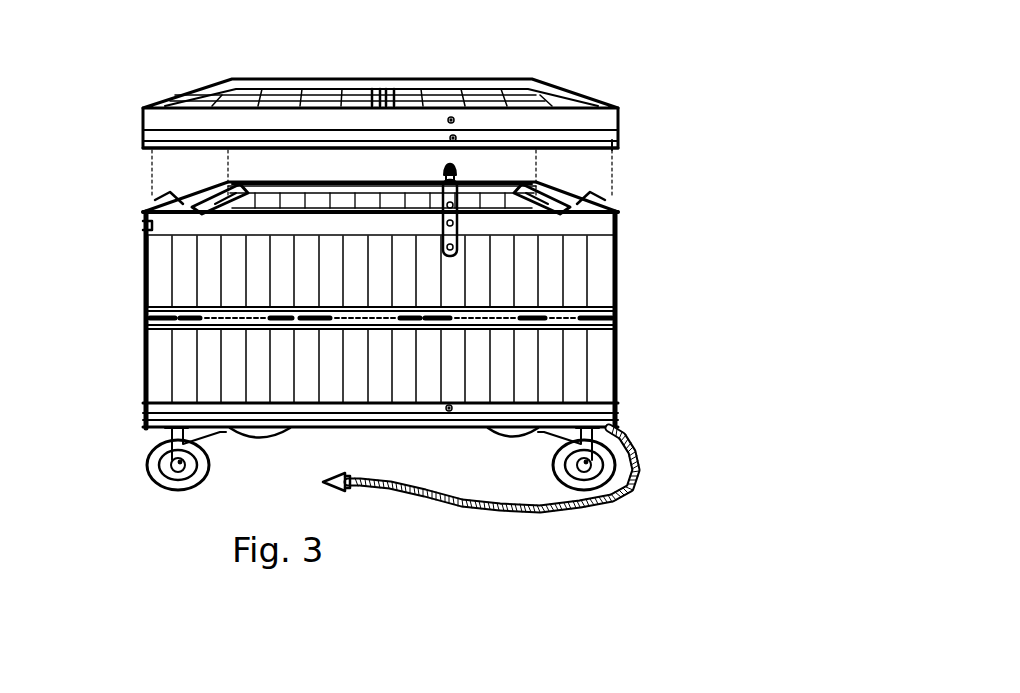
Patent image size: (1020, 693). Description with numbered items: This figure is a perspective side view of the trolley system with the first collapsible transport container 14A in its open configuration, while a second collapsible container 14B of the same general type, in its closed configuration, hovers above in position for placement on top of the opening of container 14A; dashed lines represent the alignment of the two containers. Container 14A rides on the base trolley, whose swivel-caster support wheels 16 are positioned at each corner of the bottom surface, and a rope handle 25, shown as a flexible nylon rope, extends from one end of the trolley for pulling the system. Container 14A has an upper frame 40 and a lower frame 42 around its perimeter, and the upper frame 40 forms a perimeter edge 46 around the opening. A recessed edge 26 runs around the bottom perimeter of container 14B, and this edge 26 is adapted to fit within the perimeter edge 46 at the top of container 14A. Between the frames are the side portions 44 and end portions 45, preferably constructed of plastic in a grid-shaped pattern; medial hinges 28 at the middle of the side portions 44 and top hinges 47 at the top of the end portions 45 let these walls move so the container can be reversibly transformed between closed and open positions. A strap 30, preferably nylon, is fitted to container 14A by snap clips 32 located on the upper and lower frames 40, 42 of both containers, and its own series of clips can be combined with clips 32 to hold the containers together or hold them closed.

The first collapsible transport container 14A is at (622, 271).
The second collapsible container 14B is at (150, 119).
The swivel-caster support wheels 16 is at (178, 490).
The rope handle 25 is at (630, 492).
The recessed edge 26 is at (620, 147).
The medial hinges 28 is at (620, 319).
The strap 30 is at (440, 166).
The snap clips 32 is at (453, 118).
The upper frame 40 is at (144, 227).
The lower frame 42 is at (144, 414).
The side portions 44 is at (162, 284).
The end portions 45 is at (230, 198).
The perimeter edge 46 is at (268, 184).
The top hinges 47 is at (160, 194).